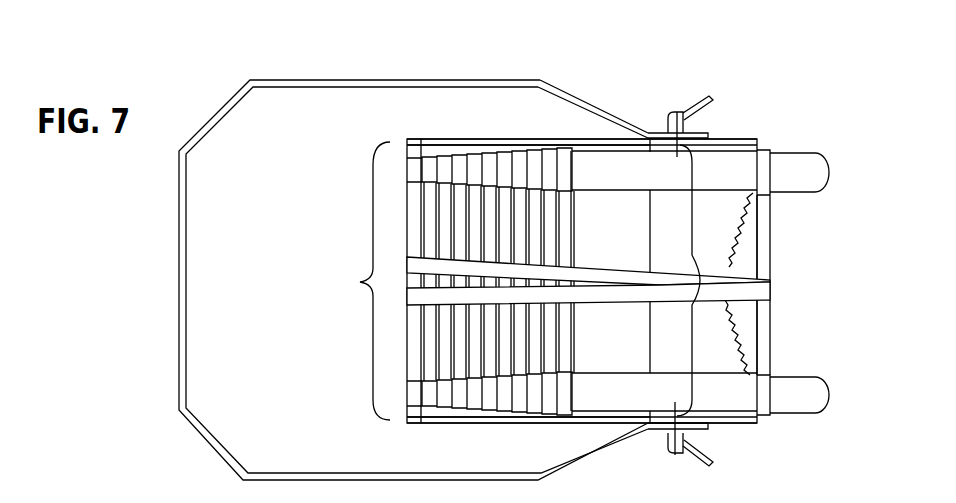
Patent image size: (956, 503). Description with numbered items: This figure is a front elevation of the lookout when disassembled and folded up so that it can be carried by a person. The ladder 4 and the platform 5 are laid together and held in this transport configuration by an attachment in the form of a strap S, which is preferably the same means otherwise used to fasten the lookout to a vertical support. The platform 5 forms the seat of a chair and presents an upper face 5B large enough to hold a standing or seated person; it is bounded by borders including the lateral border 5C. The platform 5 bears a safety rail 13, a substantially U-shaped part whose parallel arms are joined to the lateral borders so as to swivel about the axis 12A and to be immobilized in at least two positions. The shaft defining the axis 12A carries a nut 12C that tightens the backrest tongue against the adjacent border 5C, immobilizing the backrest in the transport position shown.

The safety rail 13 is at (186, 282).
The platform 5 is at (360, 282).
The upper face 5B is at (497, 137).
The lateral border 5C is at (468, 427).
The strap S is at (597, 270).
The ladder 4 is at (695, 300).
The axis 12A is at (677, 112).
The nut 12C is at (668, 113).